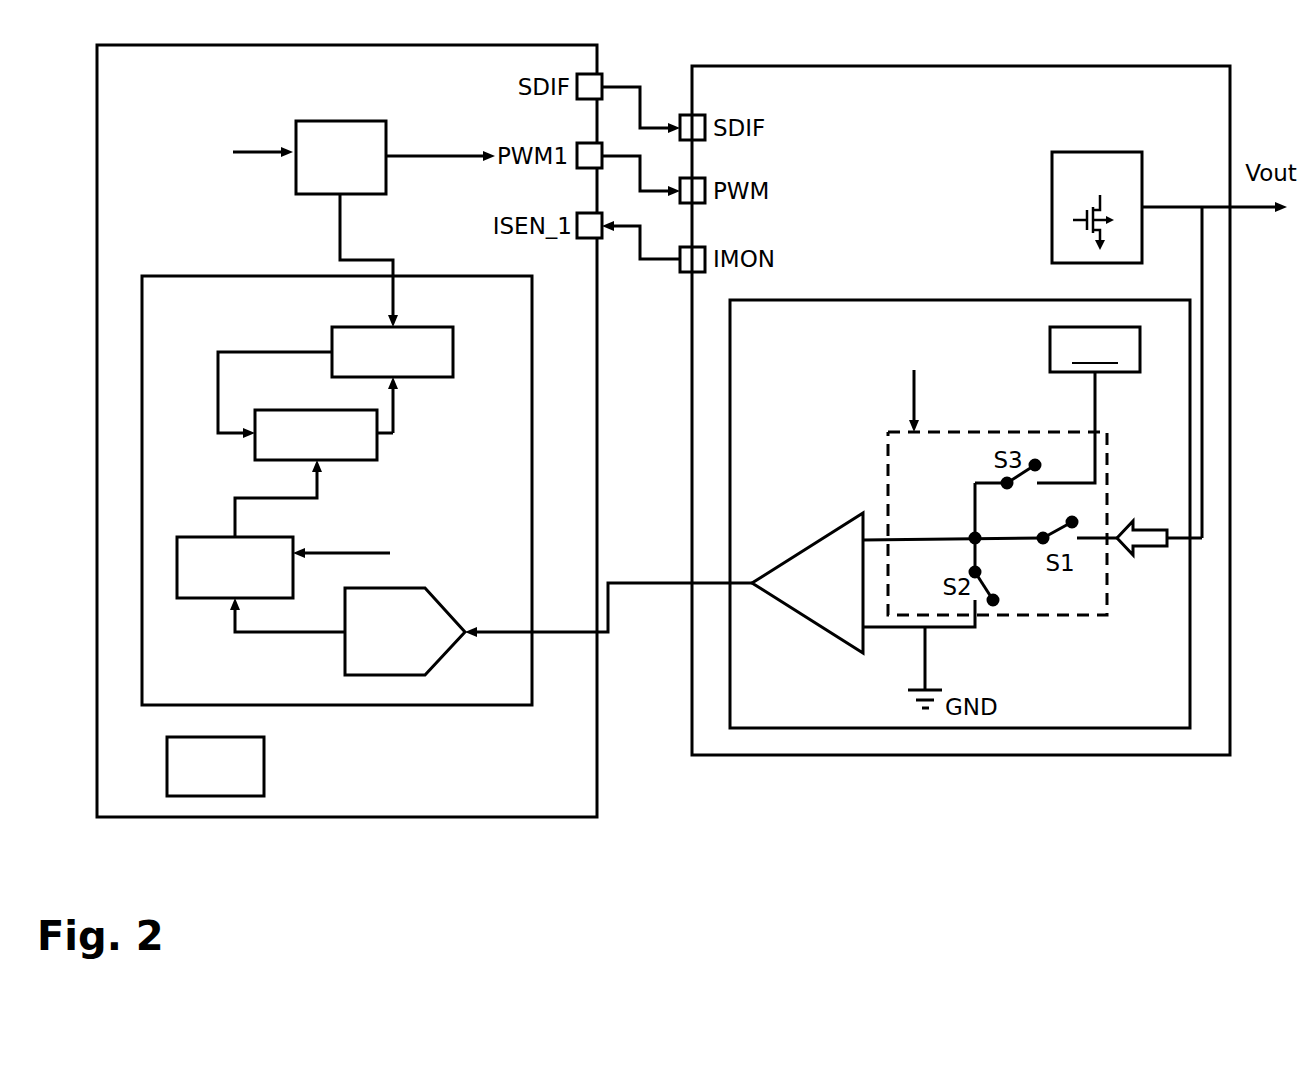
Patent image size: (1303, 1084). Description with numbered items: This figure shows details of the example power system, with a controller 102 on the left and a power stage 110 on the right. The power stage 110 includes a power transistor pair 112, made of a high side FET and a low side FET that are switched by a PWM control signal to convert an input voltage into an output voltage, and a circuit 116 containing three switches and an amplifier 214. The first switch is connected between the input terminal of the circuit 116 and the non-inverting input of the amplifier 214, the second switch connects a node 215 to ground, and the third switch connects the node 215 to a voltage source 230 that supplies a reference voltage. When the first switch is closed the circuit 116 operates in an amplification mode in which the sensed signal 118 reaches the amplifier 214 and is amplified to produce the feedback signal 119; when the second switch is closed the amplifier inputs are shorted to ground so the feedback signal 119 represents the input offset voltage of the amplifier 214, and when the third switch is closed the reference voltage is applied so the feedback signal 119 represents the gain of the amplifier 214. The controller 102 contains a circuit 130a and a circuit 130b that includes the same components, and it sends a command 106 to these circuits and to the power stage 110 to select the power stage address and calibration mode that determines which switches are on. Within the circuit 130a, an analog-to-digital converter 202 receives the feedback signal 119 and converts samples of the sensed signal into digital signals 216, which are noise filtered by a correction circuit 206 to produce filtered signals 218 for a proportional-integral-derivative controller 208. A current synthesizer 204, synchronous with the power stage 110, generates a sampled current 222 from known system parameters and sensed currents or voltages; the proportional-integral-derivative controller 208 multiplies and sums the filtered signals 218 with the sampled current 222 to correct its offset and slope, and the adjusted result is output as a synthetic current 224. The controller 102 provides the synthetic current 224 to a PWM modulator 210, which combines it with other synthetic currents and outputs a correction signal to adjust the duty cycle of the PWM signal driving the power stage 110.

The controller 102 is at (128, 93).
The power stage 110 is at (1156, 115).
The power transistor pair 112 is at (1075, 190).
The circuit 116 is at (755, 340).
The command 106 is at (700, 477).
The sensed signal 118 is at (1137, 528).
The feedback signal 119 is at (652, 582).
The circuit 130a is at (460, 318).
The circuit 130b is at (188, 780).
The analog-to-digital converter 202 is at (376, 645).
The current synthesizer 204 is at (370, 365).
The correction circuit 206 is at (213, 581).
The proportional-integral-derivative controller 208 is at (294, 448).
The PWM modulator 210 is at (319, 171).
The amplifier 214 is at (798, 596).
The node 215 is at (968, 538).
The digital signals 216 is at (267, 635).
The filtered signals 218 is at (218, 500).
The sampled current 222 is at (243, 323).
The synthetic current 224 is at (427, 437).
The voltage source 230 is at (1050, 348).